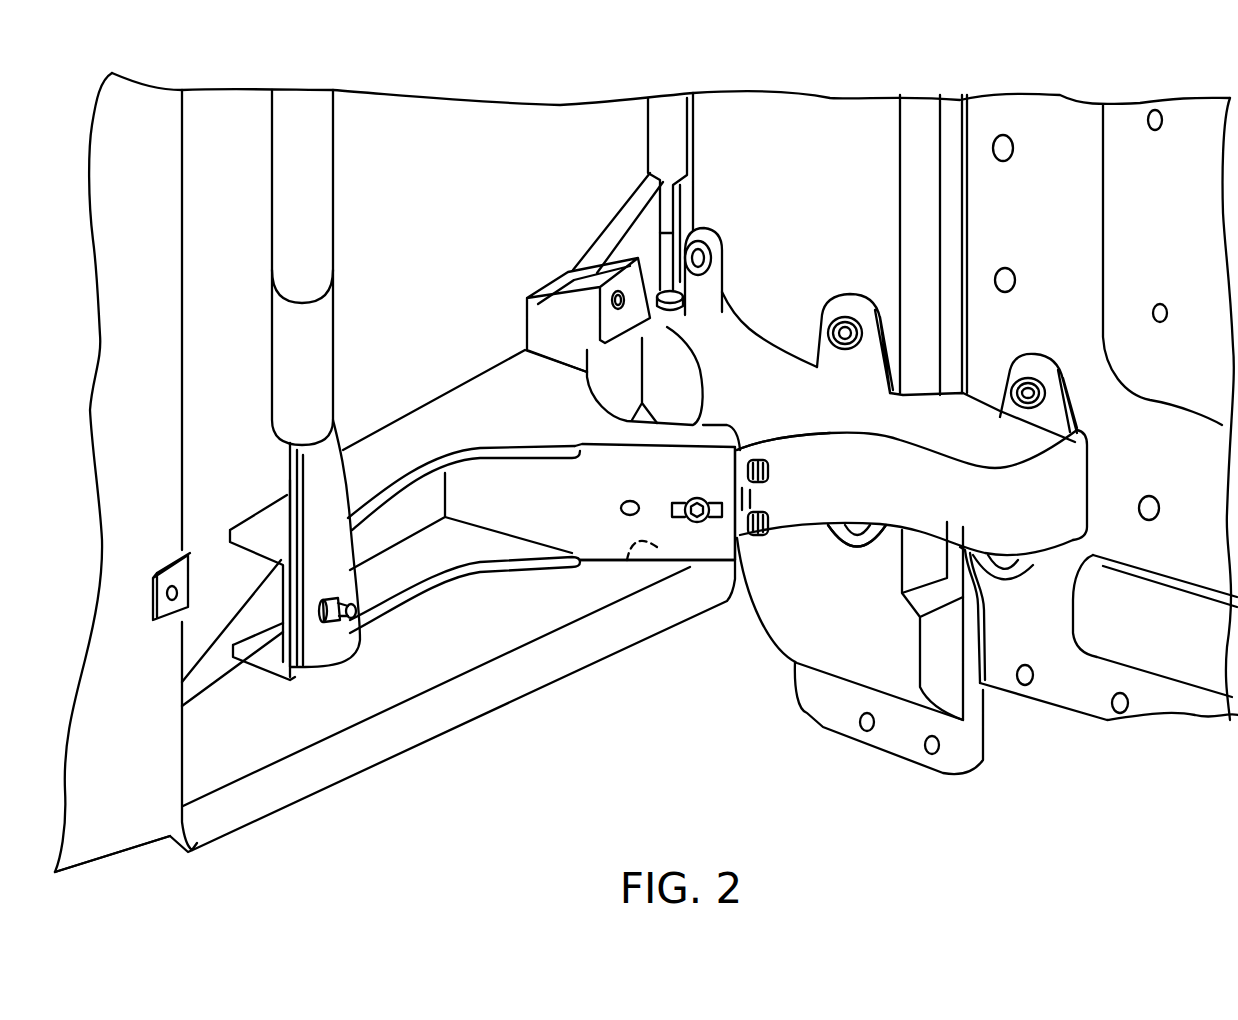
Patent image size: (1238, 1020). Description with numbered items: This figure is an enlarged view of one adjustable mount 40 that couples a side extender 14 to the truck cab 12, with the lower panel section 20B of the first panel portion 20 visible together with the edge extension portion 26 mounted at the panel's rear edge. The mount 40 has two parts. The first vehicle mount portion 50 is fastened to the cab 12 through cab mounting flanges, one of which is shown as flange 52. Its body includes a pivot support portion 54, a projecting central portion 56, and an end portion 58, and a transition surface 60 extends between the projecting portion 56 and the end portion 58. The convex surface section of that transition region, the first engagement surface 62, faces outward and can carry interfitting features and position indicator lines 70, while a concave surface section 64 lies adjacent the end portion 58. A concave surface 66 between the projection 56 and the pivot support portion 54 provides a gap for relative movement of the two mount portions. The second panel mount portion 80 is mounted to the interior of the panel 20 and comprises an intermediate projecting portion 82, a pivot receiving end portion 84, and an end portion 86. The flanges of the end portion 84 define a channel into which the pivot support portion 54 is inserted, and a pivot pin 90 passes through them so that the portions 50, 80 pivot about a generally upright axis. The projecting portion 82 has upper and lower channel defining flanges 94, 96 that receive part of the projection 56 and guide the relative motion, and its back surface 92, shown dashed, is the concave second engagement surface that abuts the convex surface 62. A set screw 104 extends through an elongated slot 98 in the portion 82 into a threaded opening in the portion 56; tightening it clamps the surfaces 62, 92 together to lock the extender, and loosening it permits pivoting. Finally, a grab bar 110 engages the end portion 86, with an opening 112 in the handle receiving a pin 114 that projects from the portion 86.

The cab 12 is at (922, 133).
The side extender 14 is at (688, 78).
The first panel portion 20 is at (420, 130).
The lower panel section 20B is at (262, 737).
The edge extension portion 26 is at (110, 805).
The mount 40 is at (722, 634).
The first vehicle mount portion 50 is at (987, 368).
The cab mounting flange 52 is at (1053, 367).
The pivot support portion 54 is at (700, 312).
The projecting central portion 56 is at (745, 420).
The end portion 58 is at (1023, 448).
The transition surface 60 is at (800, 528).
The first engagement surface 62 is at (752, 600).
The concave surface section 64 is at (869, 520).
The concave surface 66 is at (675, 378).
The position indicator lines 70 is at (742, 496).
The second panel mount portion 80 is at (491, 390).
The intermediate projecting portion 82 is at (603, 548).
The pivot receiving end portion 84 is at (562, 273).
The end portion 86 is at (262, 658).
The pivot pin 90 is at (670, 287).
The second engagement surface 92 is at (627, 562).
The upper channel defining flange 94 is at (713, 437).
The lower channel defining flange 96 is at (702, 562).
The slot 98 is at (737, 450).
The set screw 104 is at (695, 523).
The grab bar 110 is at (288, 145).
The opening 112 is at (327, 622).
The pin 114 is at (355, 615).